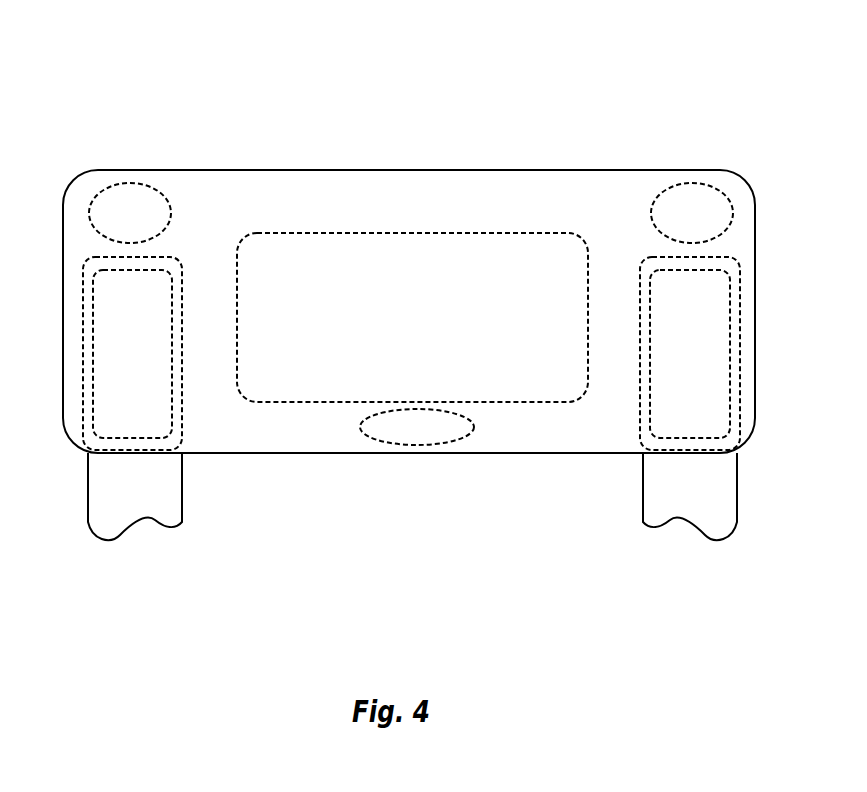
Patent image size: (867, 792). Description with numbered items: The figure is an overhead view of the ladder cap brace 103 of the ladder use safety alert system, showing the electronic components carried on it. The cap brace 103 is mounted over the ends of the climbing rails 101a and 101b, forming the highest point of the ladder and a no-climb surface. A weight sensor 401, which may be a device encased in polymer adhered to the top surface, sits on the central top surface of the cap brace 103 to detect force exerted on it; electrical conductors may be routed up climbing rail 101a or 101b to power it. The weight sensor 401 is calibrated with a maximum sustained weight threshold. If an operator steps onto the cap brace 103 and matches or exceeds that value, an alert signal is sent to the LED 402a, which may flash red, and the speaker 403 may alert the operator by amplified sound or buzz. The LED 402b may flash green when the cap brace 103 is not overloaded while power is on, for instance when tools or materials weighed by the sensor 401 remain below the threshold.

The cap brace 103 is at (402, 128).
The climbing rail 101a is at (643, 472).
The climbing rail 101b is at (182, 478).
The weight sensor 401 is at (412, 232).
The LED 402a is at (695, 183).
The LED 402b is at (135, 183).
The speaker 403 is at (474, 427).